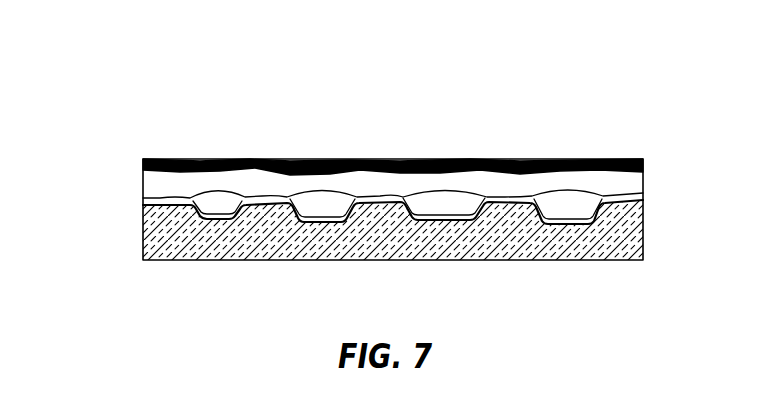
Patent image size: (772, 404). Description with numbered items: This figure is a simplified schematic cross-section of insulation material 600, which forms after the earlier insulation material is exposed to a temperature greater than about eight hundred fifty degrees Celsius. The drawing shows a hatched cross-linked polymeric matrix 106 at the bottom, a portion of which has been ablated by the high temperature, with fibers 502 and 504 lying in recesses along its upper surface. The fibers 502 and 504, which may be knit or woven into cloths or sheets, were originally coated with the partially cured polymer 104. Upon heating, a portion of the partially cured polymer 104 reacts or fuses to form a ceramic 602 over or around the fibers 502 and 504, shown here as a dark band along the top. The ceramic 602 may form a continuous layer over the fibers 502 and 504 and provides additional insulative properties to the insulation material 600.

The insulation material 600 is at (102, 87).
The ceramic 602 is at (422, 165).
The fiber 502 is at (633, 180).
The partially cured polymer 104 is at (158, 200).
The cross-linked polymeric matrix 106 is at (640, 233).
The fiber 504 is at (323, 198).